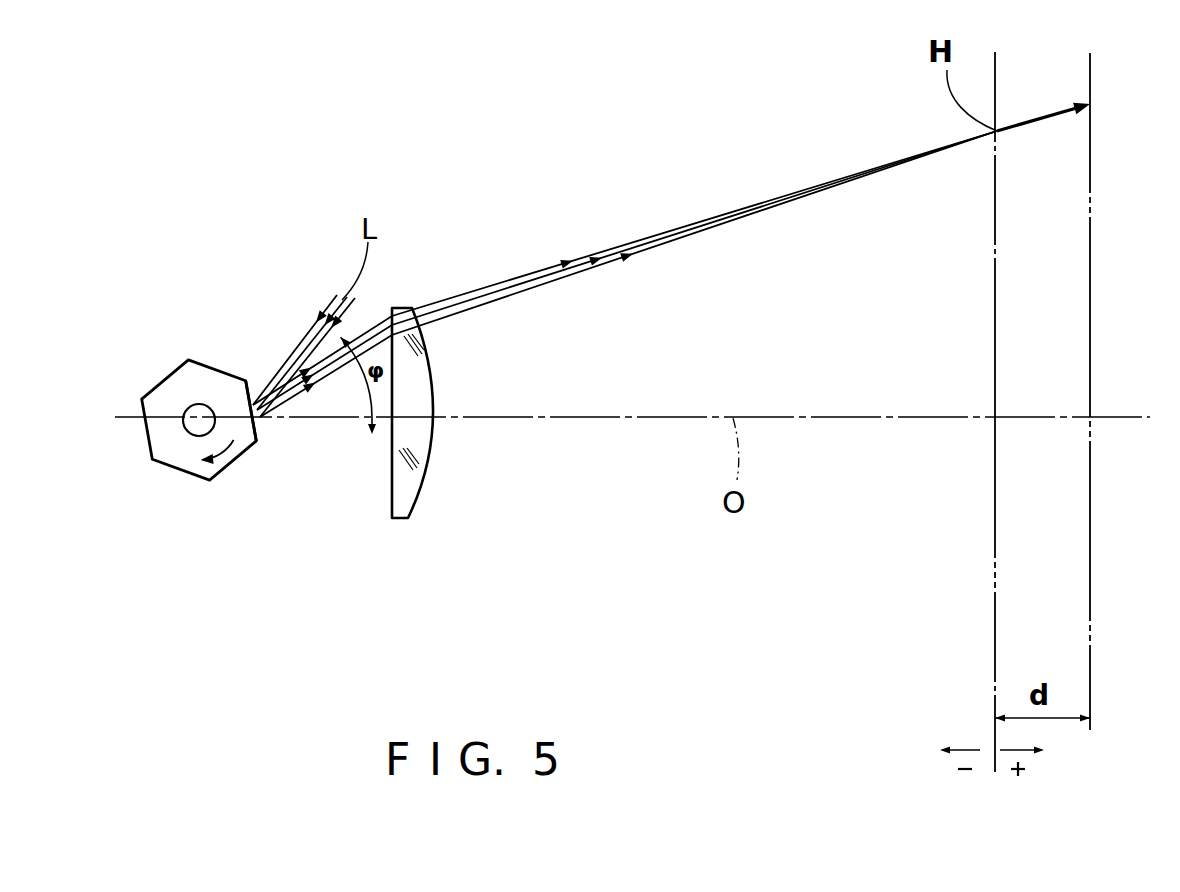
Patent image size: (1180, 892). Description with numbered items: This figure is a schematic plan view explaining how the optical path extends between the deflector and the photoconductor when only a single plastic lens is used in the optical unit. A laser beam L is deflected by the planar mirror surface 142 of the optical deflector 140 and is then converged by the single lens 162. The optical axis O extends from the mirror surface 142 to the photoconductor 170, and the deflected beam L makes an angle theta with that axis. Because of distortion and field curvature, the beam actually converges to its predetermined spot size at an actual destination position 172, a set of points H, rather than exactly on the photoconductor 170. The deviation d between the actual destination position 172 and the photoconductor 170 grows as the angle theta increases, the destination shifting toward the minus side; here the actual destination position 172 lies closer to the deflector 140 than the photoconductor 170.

The optical deflector 140 is at (210, 383).
The planar mirror surface 142 is at (258, 432).
The single lens 162 is at (425, 477).
The photoconductor 170 is at (1090, 530).
The actual destination position 172 is at (992, 660).